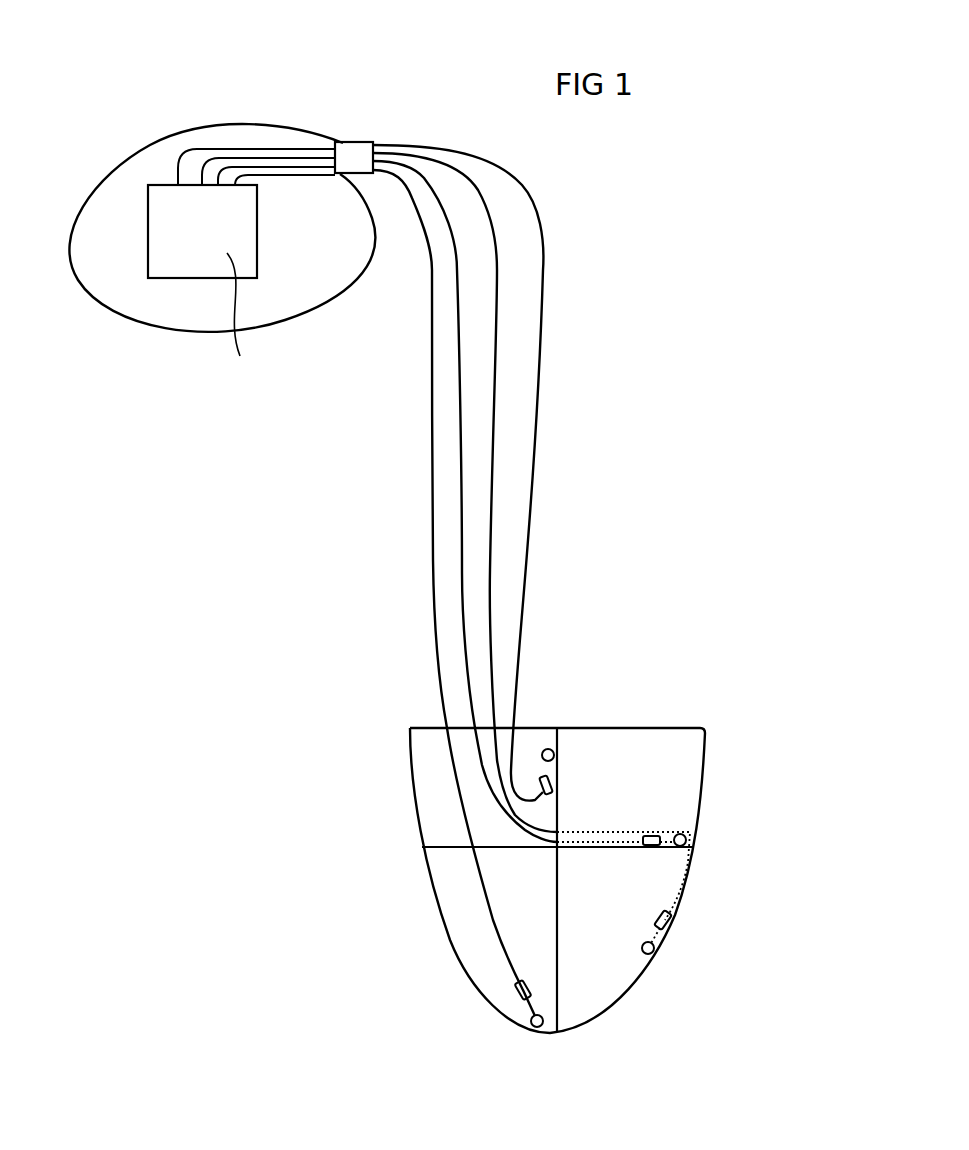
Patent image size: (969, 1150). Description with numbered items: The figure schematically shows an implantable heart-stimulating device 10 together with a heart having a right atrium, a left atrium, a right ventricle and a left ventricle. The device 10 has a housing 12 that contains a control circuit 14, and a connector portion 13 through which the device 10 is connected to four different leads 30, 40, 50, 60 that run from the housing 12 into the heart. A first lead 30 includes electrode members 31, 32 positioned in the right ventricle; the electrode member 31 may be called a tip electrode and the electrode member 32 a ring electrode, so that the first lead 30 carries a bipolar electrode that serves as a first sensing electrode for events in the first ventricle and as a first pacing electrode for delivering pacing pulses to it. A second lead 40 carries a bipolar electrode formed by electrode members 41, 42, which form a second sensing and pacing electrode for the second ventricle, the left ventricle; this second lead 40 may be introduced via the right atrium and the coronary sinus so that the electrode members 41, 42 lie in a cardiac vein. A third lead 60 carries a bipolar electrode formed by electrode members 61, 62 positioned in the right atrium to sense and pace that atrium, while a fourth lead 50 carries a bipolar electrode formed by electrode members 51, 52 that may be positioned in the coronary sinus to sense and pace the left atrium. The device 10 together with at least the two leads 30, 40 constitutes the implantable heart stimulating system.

The implantable heart-stimulating device 10 is at (169, 80).
The housing 12 is at (117, 152).
The connector portion 13 is at (343, 142).
The control circuit 14 is at (170, 257).
The first lead 30 is at (433, 490).
The electrode member 31 is at (533, 1026).
The electrode member 32 is at (518, 991).
The second lead 40 is at (498, 397).
The electrode member 41 is at (652, 952).
The electrode member 42 is at (670, 923).
The fourth lead 50 is at (462, 573).
The electrode member 51 is at (697, 837).
The electrode member 52 is at (652, 832).
The third lead 60 is at (532, 520).
The electrode member 61 is at (548, 749).
The electrode member 62 is at (553, 781).